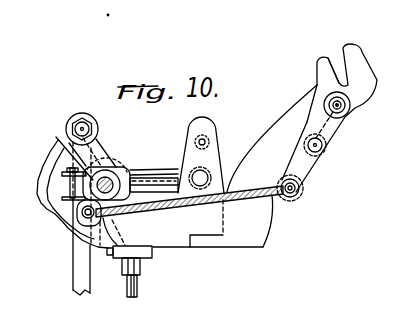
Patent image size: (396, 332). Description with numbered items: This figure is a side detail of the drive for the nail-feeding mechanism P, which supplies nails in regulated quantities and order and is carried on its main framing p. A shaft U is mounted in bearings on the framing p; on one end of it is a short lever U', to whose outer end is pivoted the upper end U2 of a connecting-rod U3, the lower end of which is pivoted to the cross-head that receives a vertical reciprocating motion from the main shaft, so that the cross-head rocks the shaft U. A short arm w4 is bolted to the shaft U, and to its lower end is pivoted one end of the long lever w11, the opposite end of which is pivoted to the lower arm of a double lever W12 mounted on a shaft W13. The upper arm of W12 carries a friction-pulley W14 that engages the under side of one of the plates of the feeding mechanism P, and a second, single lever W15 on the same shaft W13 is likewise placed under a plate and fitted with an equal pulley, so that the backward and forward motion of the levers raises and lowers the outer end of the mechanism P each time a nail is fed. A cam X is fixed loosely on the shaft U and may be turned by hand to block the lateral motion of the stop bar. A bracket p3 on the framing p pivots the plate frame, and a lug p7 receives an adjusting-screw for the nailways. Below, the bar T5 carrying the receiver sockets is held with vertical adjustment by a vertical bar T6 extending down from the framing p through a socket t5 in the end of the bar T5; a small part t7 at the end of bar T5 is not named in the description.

The cam X is at (66, 194).
The short lever U' is at (64, 149).
The upper end of connecting-rod U2 is at (82, 121).
The connecting-rod U3 is at (73, 277).
The shaft U is at (123, 169).
The short arm w4 is at (90, 217).
The lever w11 is at (189, 205).
The double lever W12 is at (303, 174).
The shaft W13 is at (324, 142).
The friction-pulley W14 is at (346, 108).
The second lever W15 is at (315, 120).
The main framing p is at (302, 118).
The nail-feeding mechanism P is at (197, 221).
The bracket p3 is at (219, 151).
The lug p7 is at (362, 62).
The bar T5 is at (152, 254).
The vertical bar T6 is at (141, 283).
The socket t5 is at (124, 270).
The bolt head t7 is at (102, 257).